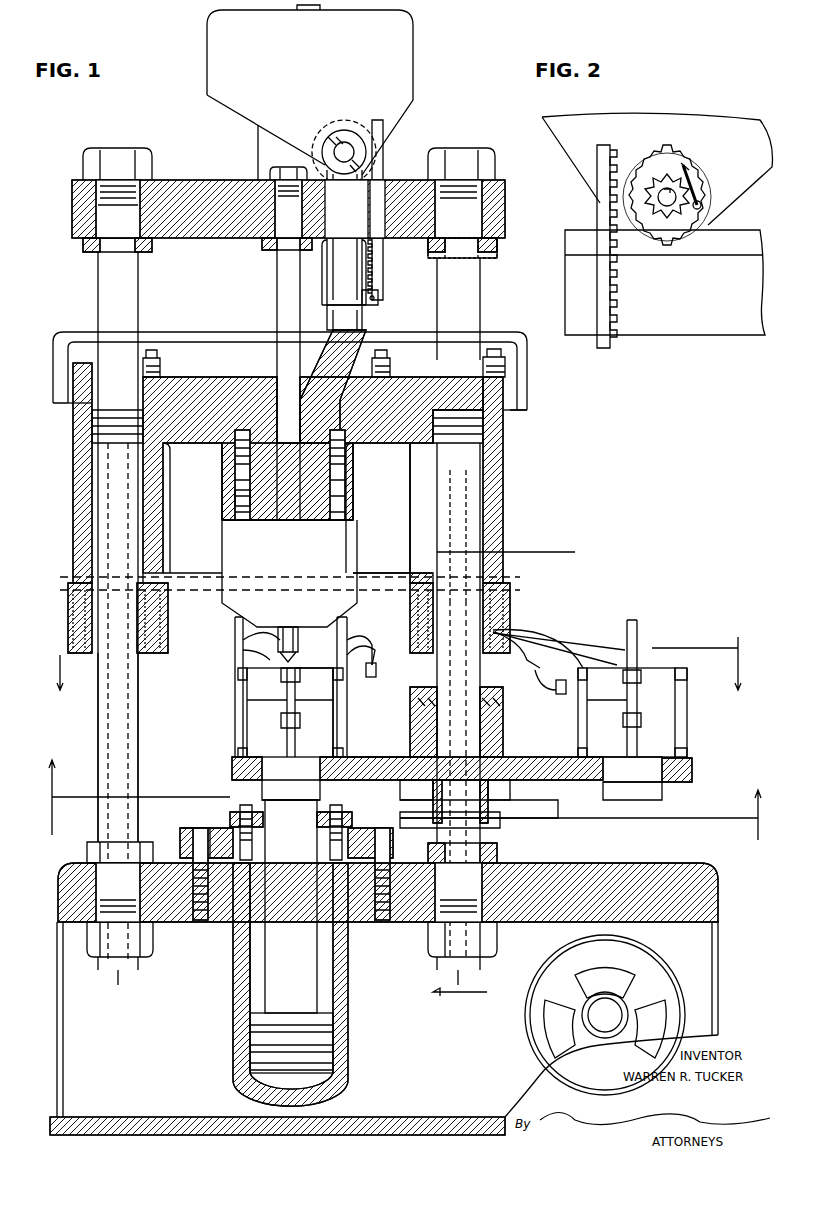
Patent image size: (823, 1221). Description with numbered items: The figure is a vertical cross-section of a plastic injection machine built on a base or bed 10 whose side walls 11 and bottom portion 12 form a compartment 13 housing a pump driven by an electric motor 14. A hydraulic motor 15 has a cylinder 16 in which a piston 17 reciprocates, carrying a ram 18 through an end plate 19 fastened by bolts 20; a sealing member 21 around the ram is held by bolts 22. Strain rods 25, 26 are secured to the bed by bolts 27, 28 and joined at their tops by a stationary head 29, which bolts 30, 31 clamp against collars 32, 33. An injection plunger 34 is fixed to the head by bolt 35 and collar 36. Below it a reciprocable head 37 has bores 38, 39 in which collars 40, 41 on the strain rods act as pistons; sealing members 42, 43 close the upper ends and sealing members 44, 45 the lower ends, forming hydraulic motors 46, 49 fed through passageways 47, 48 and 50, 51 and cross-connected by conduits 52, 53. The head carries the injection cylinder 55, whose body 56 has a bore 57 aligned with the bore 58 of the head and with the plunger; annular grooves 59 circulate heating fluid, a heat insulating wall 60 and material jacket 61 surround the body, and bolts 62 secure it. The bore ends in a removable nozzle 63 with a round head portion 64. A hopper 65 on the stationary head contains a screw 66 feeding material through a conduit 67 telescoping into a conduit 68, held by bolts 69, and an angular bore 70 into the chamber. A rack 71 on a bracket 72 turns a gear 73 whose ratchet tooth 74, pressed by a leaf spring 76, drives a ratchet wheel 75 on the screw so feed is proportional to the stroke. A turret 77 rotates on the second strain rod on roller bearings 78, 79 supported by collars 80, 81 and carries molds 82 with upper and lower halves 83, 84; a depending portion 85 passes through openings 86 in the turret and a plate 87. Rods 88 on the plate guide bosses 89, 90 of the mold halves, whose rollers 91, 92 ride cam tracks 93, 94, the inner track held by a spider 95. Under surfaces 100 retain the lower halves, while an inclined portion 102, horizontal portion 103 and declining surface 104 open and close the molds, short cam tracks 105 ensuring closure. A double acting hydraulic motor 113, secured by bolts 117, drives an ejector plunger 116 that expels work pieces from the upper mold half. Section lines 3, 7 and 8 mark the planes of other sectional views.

In FIG. 1, the section line 3- 3 is at (496, 773).
In FIG. 1, the section line 7- 7 is at (398, 673).
In FIG. 1, the section line 8- 8 is at (402, 793).
In FIG. 1, the base or bed 10 is at (65, 875).
In FIG. 1, the side walls 11 is at (57, 968).
In FIG. 1, the bottom portion 12 is at (115, 1117).
In FIG. 1, the compartment 13 is at (442, 1033).
In FIG. 1, the electric motor 14 is at (530, 1030).
In FIG. 1, the hydraulic motor 15 is at (348, 990).
In FIG. 1, the cylinder 16 is at (248, 985).
In FIG. 1, the piston 17 is at (322, 1040).
In FIG. 1, the plunger or ram 18 is at (295, 943).
In FIG. 1, the end plate 19 is at (393, 840).
In FIG. 1, the bolts 20 is at (200, 920).
In FIG. 1, the sealing member 21 is at (230, 818).
In FIG. 1, the bolts 22 is at (240, 805).
In FIG. 1, the strain rod 25 is at (98, 740).
In FIG. 1, the strain rod 26 is at (488, 835).
In FIG. 1, the bolts 27 is at (100, 958).
In FIG. 1, the bolts 28 is at (497, 945).
In FIG. 1, the stationary head 29 is at (190, 178).
In FIG. 2, the stationary head 29 is at (648, 335).
In FIG. 1, the bolt 30 is at (122, 158).
In FIG. 1, the bolt 31 is at (462, 148).
In FIG. 1, the collar 32 is at (88, 250).
In FIG. 1, the collar 33 is at (497, 245).
In FIG. 1, the injection plunger 34 is at (277, 281).
In FIG. 1, the bolt 35 is at (277, 175).
In FIG. 1, the collar 36 is at (263, 248).
In FIG. 1, the reciprocable head 37 is at (203, 377).
In FIG. 1, the bore 38 is at (150, 512).
In FIG. 1, the bore 39 is at (490, 502).
In FIG. 1, the collar 40 is at (100, 431).
In FIG. 1, the collar 41 is at (470, 430).
In FIG. 1, the sealing member 42 is at (160, 362).
In FIG. 1, the sealing member 43 is at (505, 366).
In FIG. 1, the sealing member 44 is at (68, 630).
In FIG. 1, the sealing member 45 is at (510, 625).
In FIG. 1, the hydraulic motor 46 is at (73, 468).
In FIG. 1, the passageway 47 is at (68, 406).
In FIG. 1, the passageway 48 is at (178, 568).
In FIG. 1, the hydraulic motor 49 is at (503, 470).
In FIG. 1, the fluid passageway 50 is at (505, 412).
In FIG. 1, the fluid passageway 51 is at (408, 578).
In FIG. 1, the conduit 52 is at (378, 573).
In FIG. 1, the conduit 53 is at (240, 335).
In FIG. 1, the injection cylinder 55 is at (350, 485).
In FIG. 1, the cylindrical body 56 is at (235, 468).
In FIG. 1, the bore 57 is at (290, 480).
In FIG. 1, the bore 58 is at (290, 425).
In FIG. 1, the annular grooves 59 is at (235, 498).
In FIG. 1, the heat insulating wall 60 is at (353, 510).
In FIG. 1, the material jacket 61 is at (357, 538).
In FIG. 1, the bolts 62 is at (345, 468).
In FIG. 1, the injection nozzle 63 is at (298, 640).
In FIG. 1, the round head portion 64 is at (296, 658).
In FIG. 1, the feeding hopper 65 is at (414, 52).
In FIG. 2, the feeding hopper 65 is at (720, 120).
In FIG. 1, the worm or screw 66 is at (358, 150).
In FIG. 2, the worm or screw 66 is at (660, 204).
In FIG. 1, the discharge passage or conduit 67 is at (355, 213).
In FIG. 1, the conduit 68 is at (370, 325).
In FIG. 1, the bolts 69 is at (395, 352).
In FIG. 1, the angular bore 70 is at (338, 395).
In FIG. 1, the rack 71 is at (384, 268).
In FIG. 2, the rack 71 is at (617, 270).
In FIG. 1, the bracket 72 is at (380, 298).
In FIG. 1, the gear 73 is at (337, 120).
In FIG. 2, the gear 73 is at (665, 150).
In FIG. 2, the ratchet tooth 74 is at (700, 200).
In FIG. 2, the ratchet wheel 75 is at (668, 222).
In FIG. 2, the leaf spring 76 is at (690, 178).
In FIG. 1, the turret 77 is at (692, 770).
In FIG. 1, the roller bearing 78 is at (410, 700).
In FIG. 1, the roller bearing 79 is at (510, 790).
In FIG. 1, the collar 80 is at (488, 808).
In FIG. 1, the collar 81 is at (497, 855).
In FIG. 1, the molds 82 is at (247, 710).
In FIG. 1, the upper half 83 is at (325, 690).
In FIG. 1, the lower half 84 is at (325, 725).
In FIG. 1, the depending portion 85 is at (320, 792).
In FIG. 1, the openings 86 is at (262, 790).
In FIG. 1, the plate 87 is at (362, 748).
In FIG. 1, the rods 88 is at (296, 740).
In FIG. 1, the bosses 89 is at (300, 720).
In FIG. 1, the bosses 90 is at (300, 677).
In FIG. 1, the rollers 91 is at (238, 750).
In FIG. 1, the rollers 92 is at (238, 670).
In FIG. 1, the inner cam track 93 is at (385, 628).
In FIG. 1, the outer cam track 94 is at (605, 648).
In FIG. 1, the spider 95 is at (386, 660).
In FIG. 1, the under surfaces 100 is at (385, 757).
In FIG. 1, the inclined portion 102 is at (583, 640).
In FIG. 1, the horizontal portion 103 is at (687, 695).
In FIG. 1, the declining surface 104 is at (360, 652).
In FIG. 1, the short cam tracks 105 is at (235, 633).
In FIG. 1, the double acting hydraulic motor 113 is at (482, 295).
In FIG. 1, the plunger 116 is at (470, 530).
In FIG. 1, the bolts 117 is at (497, 160).